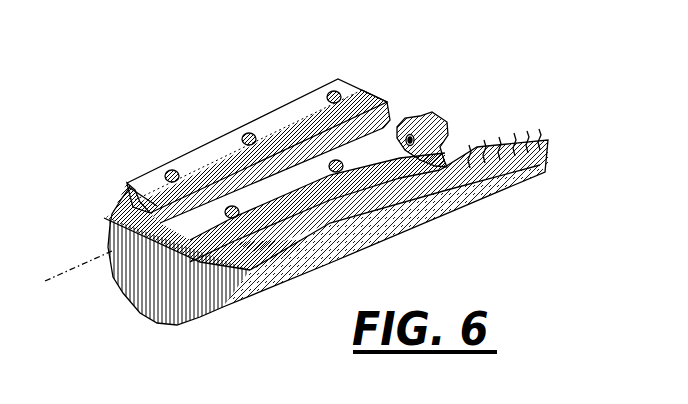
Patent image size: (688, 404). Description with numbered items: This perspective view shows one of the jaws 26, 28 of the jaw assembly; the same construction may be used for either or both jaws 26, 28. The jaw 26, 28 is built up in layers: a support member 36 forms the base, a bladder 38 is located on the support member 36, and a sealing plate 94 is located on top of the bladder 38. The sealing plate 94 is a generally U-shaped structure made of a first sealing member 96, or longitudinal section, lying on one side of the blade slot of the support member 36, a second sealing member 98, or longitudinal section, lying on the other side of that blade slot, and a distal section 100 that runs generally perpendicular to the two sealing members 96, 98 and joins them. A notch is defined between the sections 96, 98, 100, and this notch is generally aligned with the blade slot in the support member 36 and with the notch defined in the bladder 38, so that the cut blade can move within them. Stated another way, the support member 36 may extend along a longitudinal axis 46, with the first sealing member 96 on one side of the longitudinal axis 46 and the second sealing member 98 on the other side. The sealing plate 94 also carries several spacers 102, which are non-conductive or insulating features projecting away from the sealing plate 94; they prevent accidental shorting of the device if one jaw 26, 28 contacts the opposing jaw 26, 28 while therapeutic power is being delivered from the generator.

The jaw 26 is at (289, 168).
The jaw 28 is at (70, 76).
The support member 36 is at (152, 327).
The bladder 38 is at (99, 225).
The longitudinal axis 46 is at (70, 268).
The sealing plate 94 is at (177, 155).
The first sealing member 96 is at (430, 124).
The second sealing member 98 is at (298, 118).
The distal section 100 is at (130, 187).
The spacers 102 is at (245, 134).